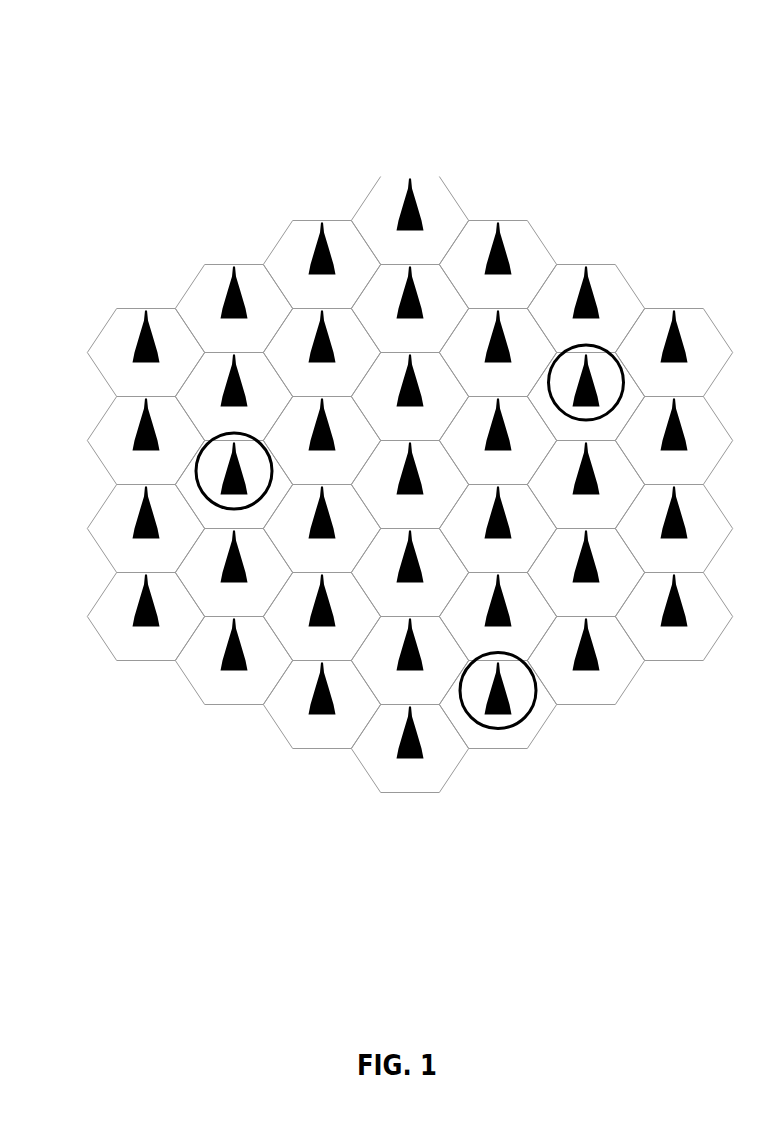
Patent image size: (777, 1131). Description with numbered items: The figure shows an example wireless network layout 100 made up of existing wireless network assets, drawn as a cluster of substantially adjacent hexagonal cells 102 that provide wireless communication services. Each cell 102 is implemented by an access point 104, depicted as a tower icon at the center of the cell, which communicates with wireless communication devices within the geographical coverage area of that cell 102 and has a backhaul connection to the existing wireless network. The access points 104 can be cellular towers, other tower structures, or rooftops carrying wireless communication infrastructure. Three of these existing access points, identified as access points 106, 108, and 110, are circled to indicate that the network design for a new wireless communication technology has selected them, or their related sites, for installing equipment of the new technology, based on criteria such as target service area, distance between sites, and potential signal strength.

The wireless network layout 100 is at (634, 58).
The cell 102 is at (412, 177).
The access point 104 is at (418, 209).
The access point 106 is at (603, 347).
The access point 108 is at (527, 718).
The access point 110 is at (218, 433).